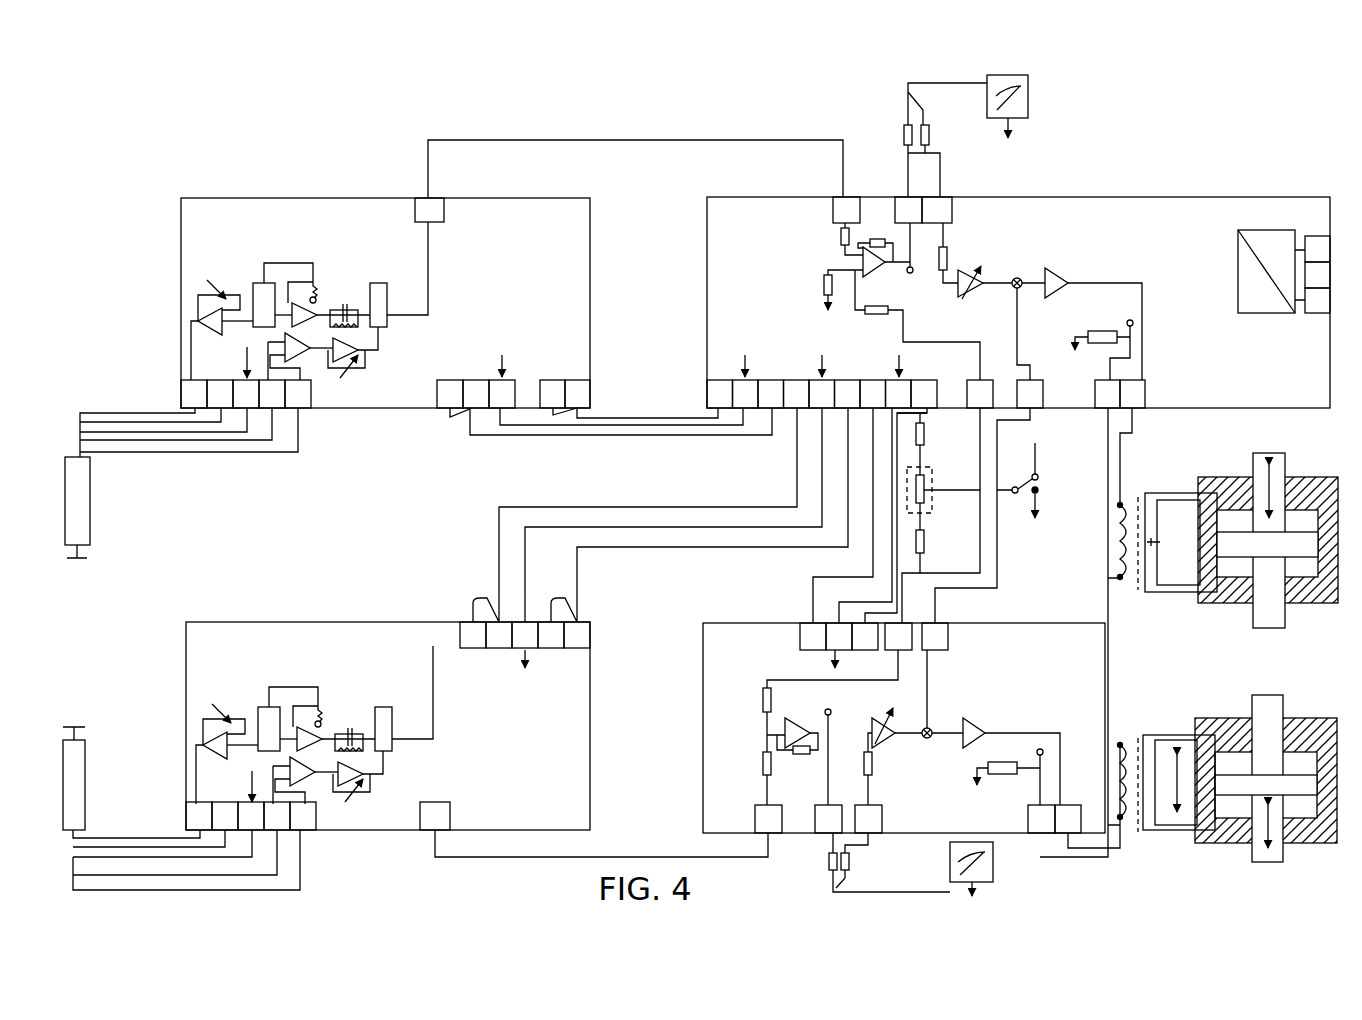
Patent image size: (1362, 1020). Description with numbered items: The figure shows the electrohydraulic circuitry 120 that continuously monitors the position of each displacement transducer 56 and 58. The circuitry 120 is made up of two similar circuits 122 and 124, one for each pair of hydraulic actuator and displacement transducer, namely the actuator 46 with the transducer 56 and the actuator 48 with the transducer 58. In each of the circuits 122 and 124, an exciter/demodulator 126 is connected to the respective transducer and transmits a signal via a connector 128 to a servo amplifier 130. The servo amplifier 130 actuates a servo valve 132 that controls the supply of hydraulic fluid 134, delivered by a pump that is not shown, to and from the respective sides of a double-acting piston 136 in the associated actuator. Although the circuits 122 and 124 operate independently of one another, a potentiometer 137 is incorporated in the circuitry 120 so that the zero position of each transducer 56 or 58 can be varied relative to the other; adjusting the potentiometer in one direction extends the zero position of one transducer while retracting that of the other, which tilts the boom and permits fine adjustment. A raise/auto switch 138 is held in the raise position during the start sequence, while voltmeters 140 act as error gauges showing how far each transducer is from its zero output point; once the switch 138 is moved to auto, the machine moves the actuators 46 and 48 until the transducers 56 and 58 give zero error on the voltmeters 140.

The electrohydraulic circuitry 120 is at (299, 80).
The circuit 122 is at (594, 118).
The circuit 124 is at (520, 870).
The exciter/demodulator 126 is at (325, 408).
The connector 128 is at (428, 177).
The servo amplifier 130 is at (1100, 197).
The servo valve 132 is at (1130, 585).
The hydraulic fluid 134 is at (1175, 595).
The double-acting piston 136 is at (1300, 558).
The potentiometer 137 is at (930, 495).
The raise/auto switch 138 is at (1030, 500).
The voltmeter 140 is at (1030, 95).
The hydraulic actuator 46 is at (1264, 546).
The hydraulic actuator 48 is at (1210, 843).
The displacement transducer 56 is at (90, 500).
The displacement transducer 58 is at (85, 765).